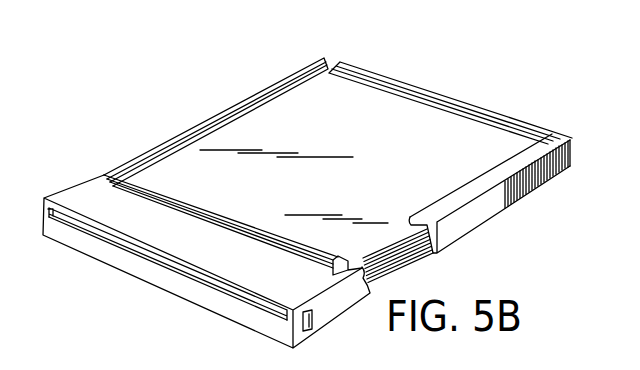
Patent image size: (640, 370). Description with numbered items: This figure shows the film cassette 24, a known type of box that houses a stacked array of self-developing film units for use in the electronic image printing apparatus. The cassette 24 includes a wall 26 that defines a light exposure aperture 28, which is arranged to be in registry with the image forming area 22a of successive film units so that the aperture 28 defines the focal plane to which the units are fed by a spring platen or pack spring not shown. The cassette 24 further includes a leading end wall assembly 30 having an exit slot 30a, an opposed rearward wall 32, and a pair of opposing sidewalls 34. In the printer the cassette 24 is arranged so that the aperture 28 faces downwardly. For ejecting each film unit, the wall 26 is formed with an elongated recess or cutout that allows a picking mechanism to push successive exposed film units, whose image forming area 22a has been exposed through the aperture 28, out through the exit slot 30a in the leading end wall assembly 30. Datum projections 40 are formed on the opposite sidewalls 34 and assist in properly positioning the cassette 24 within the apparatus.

The image forming area 22a is at (368, 138).
The film cassette 24 is at (427, 83).
The wall 26 is at (278, 278).
The light exposure aperture 28 is at (258, 100).
The leading end wall assembly 30 is at (95, 243).
The exit slot 30a is at (171, 269).
The rearward wall 32 is at (572, 141).
The sidewalls 34 is at (73, 182).
The datum projections 40 is at (312, 321).